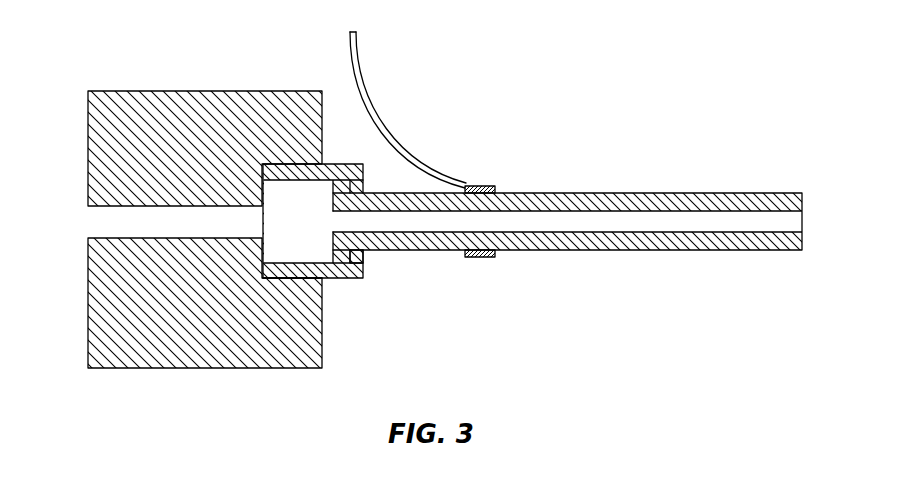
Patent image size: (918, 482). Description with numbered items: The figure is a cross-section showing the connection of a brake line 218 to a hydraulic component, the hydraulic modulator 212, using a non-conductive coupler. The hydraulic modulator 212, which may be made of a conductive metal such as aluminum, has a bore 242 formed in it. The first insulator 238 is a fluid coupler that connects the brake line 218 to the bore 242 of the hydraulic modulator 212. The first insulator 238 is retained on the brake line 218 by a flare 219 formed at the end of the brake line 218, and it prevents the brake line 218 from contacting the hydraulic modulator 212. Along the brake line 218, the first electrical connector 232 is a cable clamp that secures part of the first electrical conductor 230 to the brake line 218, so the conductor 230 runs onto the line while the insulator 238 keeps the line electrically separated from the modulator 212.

The hydraulic modulator 212 is at (107, 90).
The brake line 218 is at (782, 193).
The flare 219 is at (335, 177).
The first electrical conductor 230 is at (358, 62).
The first electrical connector 232 is at (487, 185).
The first insulator 238 is at (365, 262).
The bore 242 is at (313, 280).